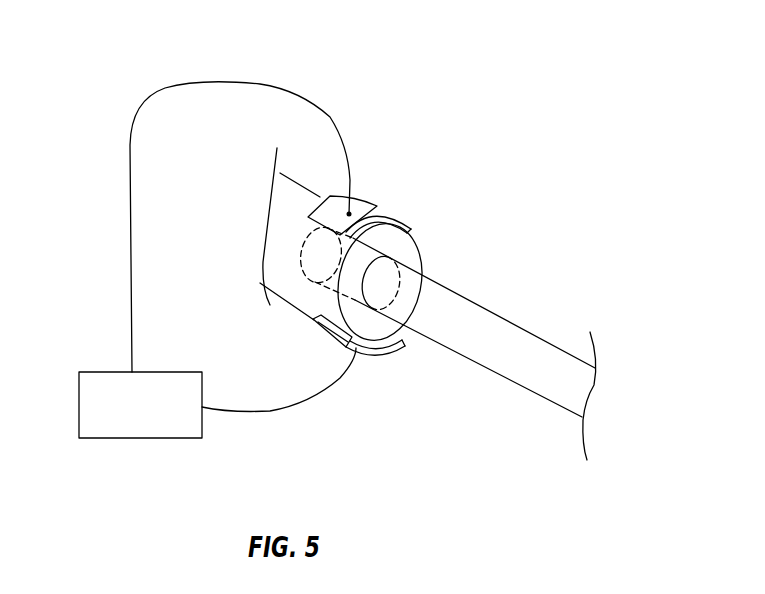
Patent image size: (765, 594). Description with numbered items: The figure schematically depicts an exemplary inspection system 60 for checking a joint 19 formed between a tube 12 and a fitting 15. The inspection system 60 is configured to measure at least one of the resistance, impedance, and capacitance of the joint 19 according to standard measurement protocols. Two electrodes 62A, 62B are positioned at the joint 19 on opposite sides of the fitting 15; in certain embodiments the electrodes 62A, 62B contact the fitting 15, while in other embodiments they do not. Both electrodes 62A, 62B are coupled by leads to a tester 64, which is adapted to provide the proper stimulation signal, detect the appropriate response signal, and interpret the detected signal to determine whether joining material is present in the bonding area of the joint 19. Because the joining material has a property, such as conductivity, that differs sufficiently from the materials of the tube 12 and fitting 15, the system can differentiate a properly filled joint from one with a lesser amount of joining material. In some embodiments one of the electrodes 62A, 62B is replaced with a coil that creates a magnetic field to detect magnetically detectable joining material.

The inspection system 60 is at (400, 40).
The tester 64 is at (95, 372).
The fitting 15 is at (275, 250).
The tube 12 is at (463, 296).
The joint 19 is at (442, 240).
The electrode 62A is at (380, 210).
The electrode 62B is at (390, 353).